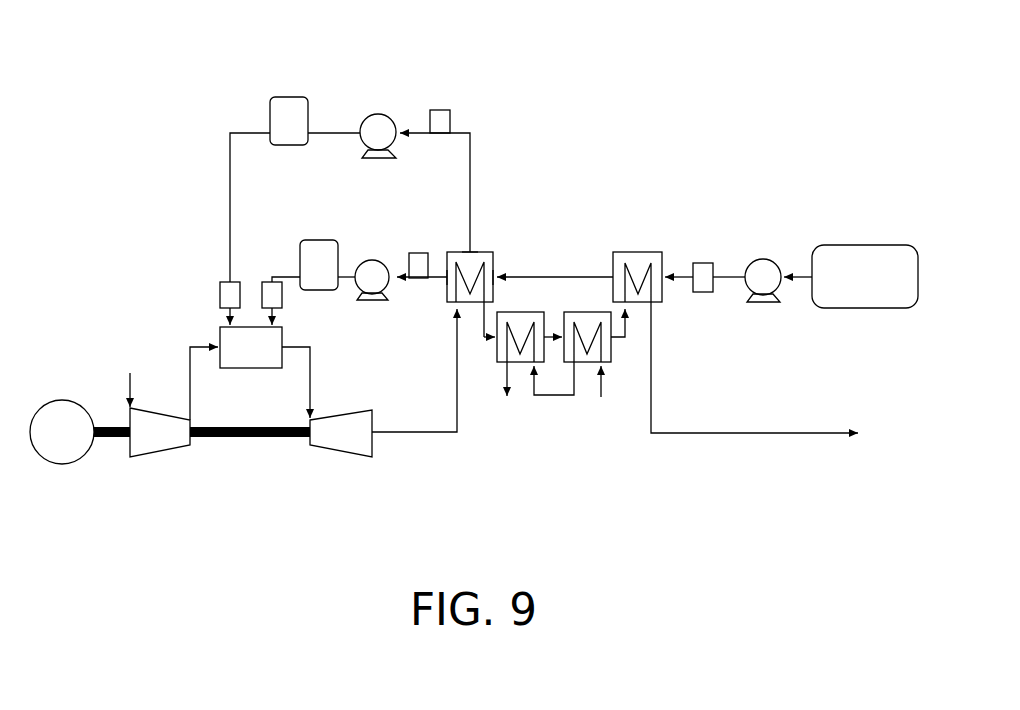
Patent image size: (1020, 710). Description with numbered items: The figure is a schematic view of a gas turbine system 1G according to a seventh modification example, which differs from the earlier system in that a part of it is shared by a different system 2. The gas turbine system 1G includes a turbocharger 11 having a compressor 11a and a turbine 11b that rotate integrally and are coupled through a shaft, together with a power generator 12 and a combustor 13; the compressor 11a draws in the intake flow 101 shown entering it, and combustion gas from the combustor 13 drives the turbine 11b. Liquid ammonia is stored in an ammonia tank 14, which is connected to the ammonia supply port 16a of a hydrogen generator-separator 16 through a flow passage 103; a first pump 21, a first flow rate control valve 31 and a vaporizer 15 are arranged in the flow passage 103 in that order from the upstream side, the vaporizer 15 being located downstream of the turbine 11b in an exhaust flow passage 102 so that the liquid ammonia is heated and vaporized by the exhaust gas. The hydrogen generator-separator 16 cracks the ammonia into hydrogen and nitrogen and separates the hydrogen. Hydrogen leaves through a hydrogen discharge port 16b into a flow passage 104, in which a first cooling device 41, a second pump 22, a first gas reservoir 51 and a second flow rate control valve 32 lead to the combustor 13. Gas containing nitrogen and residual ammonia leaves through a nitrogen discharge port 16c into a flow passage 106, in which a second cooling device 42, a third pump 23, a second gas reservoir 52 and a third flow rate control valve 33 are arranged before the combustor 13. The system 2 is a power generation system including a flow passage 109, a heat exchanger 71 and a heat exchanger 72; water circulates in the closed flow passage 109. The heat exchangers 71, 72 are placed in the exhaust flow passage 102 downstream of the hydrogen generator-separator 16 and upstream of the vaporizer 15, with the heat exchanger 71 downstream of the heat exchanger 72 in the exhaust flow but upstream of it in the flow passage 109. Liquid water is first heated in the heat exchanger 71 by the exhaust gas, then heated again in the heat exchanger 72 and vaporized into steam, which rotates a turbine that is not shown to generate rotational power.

The gas turbine system 1G is at (86, 61).
The system 2 is at (566, 466).
The turbocharger 11 is at (218, 493).
The compressor 11a is at (162, 458).
The turbine 11b is at (345, 453).
The power generator 12 is at (62, 466).
The combustor 13 is at (252, 369).
The ammonia tank 14 is at (863, 244).
The vaporizer 15 is at (636, 251).
The hydrogen generator-separator 16 is at (483, 250).
The ammonia supply port 16a is at (497, 276).
The hydrogen discharge port 16b is at (445, 274).
The nitrogen discharge port 16c is at (468, 248).
The first pump 21 is at (760, 258).
The second pump 22 is at (372, 259).
The third pump 23 is at (378, 114).
The first flow rate control valve 31 is at (702, 262).
The second flow rate control valve 32 is at (284, 296).
The third flow rate control valve 33 is at (219, 293).
The first cooling device 41 is at (416, 252).
The second cooling device 42 is at (440, 109).
The first gas reservoir 51 is at (316, 238).
The second gas reservoir 52 is at (289, 96).
The heat exchanger 71 is at (612, 345).
The heat exchanger 72 is at (497, 347).
The air 101 is at (188, 362).
The exhaust flow passage 102 is at (313, 381).
The flow passage 103 is at (578, 275).
The flow passage 104 is at (277, 273).
The flow passage 106 is at (229, 158).
The flow passage 109 is at (506, 399).